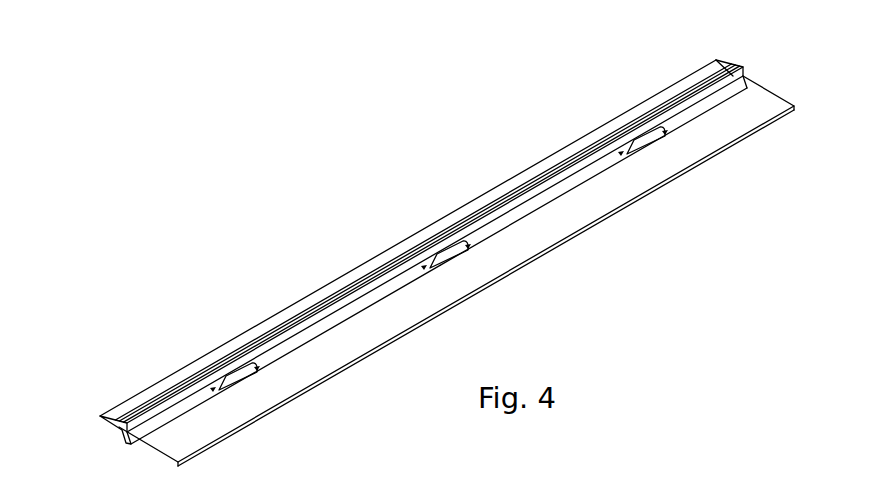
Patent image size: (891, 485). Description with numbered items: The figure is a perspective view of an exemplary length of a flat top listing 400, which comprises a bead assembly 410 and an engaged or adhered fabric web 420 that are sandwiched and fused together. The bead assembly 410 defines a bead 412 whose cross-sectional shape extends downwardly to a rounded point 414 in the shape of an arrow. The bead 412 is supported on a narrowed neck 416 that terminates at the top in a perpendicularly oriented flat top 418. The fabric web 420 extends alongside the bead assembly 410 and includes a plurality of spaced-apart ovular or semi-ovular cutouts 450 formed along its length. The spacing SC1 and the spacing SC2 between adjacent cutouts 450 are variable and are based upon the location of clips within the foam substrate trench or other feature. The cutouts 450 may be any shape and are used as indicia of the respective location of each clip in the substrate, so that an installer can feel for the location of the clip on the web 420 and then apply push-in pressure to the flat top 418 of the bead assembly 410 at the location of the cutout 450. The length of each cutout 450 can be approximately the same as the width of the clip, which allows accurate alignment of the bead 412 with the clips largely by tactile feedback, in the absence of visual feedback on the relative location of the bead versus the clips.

The flat top listing 400 is at (465, 261).
The bead assembly 410 is at (465, 261).
The bead 412 is at (716, 59).
The rounded point 414 is at (521, 177).
The narrowed neck 416 is at (129, 442).
The flat top 418 is at (744, 69).
The fabric web 420 is at (545, 259).
The cutouts 450 is at (652, 145).
The spacing between cutouts SC1 is at (530, 207).
The spacing between cutouts SC2 is at (348, 322).